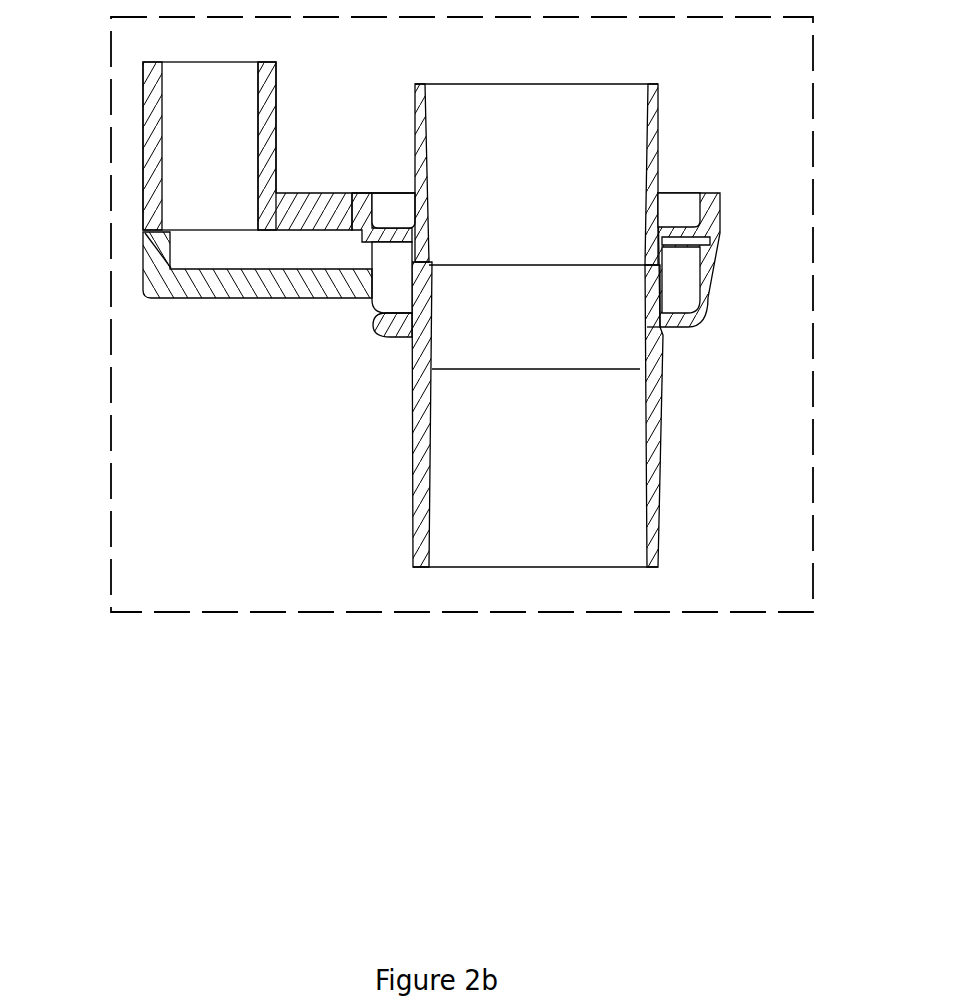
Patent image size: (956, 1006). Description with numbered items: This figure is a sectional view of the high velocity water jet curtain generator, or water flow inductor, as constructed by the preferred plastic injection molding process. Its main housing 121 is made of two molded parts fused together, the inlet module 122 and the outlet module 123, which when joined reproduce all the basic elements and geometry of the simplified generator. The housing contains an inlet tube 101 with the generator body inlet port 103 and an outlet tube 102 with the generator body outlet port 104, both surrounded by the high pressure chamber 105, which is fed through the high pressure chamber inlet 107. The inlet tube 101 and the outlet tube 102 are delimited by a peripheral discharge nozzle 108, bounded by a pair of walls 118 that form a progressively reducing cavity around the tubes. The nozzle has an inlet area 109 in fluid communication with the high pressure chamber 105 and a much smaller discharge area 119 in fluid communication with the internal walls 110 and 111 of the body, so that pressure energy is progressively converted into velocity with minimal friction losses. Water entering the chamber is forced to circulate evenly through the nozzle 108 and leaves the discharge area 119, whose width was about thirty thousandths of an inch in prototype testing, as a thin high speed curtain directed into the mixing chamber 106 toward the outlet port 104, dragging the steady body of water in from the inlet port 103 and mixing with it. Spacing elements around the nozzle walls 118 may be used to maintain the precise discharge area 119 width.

The inlet tube 101 is at (653, 458).
The outlet tube 102 is at (653, 127).
The generator body inlet port 103 is at (578, 567).
The generator body outlet port 104 is at (543, 83).
The high pressure chamber 105 is at (680, 293).
The mixing chamber 106 is at (544, 211).
The high pressure chamber inlet 107 is at (219, 119).
The peripheral discharge nozzle 108 is at (415, 297).
The nozzle inlet area 109 is at (665, 327).
The internal wall 110 is at (428, 462).
The internal wall 111 is at (422, 132).
The nozzle walls 118 is at (662, 273).
The nozzle discharge area 119 is at (427, 262).
The main housing 121 is at (235, 613).
The inlet module 122 is at (218, 300).
The outlet module 123 is at (273, 152).